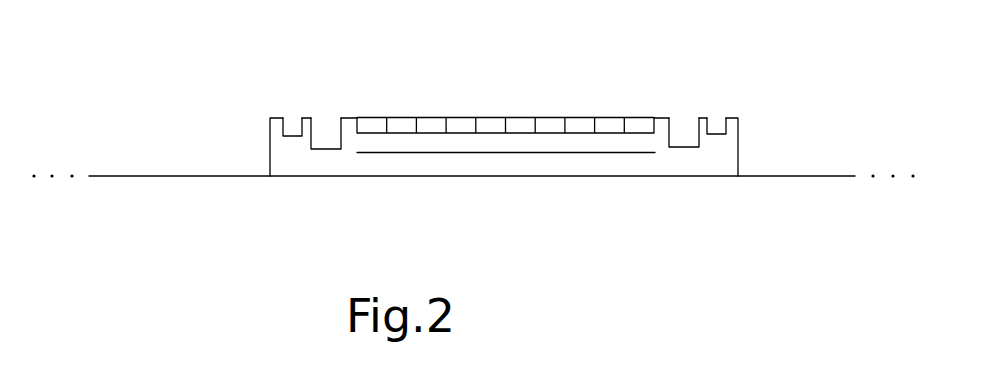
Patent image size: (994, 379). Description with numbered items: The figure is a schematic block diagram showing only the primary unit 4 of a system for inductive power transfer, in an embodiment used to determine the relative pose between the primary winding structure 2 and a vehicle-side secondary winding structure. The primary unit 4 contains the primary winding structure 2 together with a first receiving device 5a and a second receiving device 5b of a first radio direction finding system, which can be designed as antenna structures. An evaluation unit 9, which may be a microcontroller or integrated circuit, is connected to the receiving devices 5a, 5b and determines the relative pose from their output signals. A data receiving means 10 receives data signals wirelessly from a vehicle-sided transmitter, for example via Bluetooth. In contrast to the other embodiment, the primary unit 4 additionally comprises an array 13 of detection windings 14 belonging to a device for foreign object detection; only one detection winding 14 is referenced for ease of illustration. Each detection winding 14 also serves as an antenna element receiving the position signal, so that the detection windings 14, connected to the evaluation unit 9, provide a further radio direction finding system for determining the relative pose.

The primary winding structure 2 is at (522, 153).
The primary unit 4 is at (738, 118).
The evaluation unit 9 is at (291, 124).
The first receiving device 5a is at (327, 130).
The second receiving device 5b is at (678, 127).
The data receiving means 10 is at (717, 117).
The array of detection windings 13 is at (458, 133).
The detection winding 14 is at (398, 123).